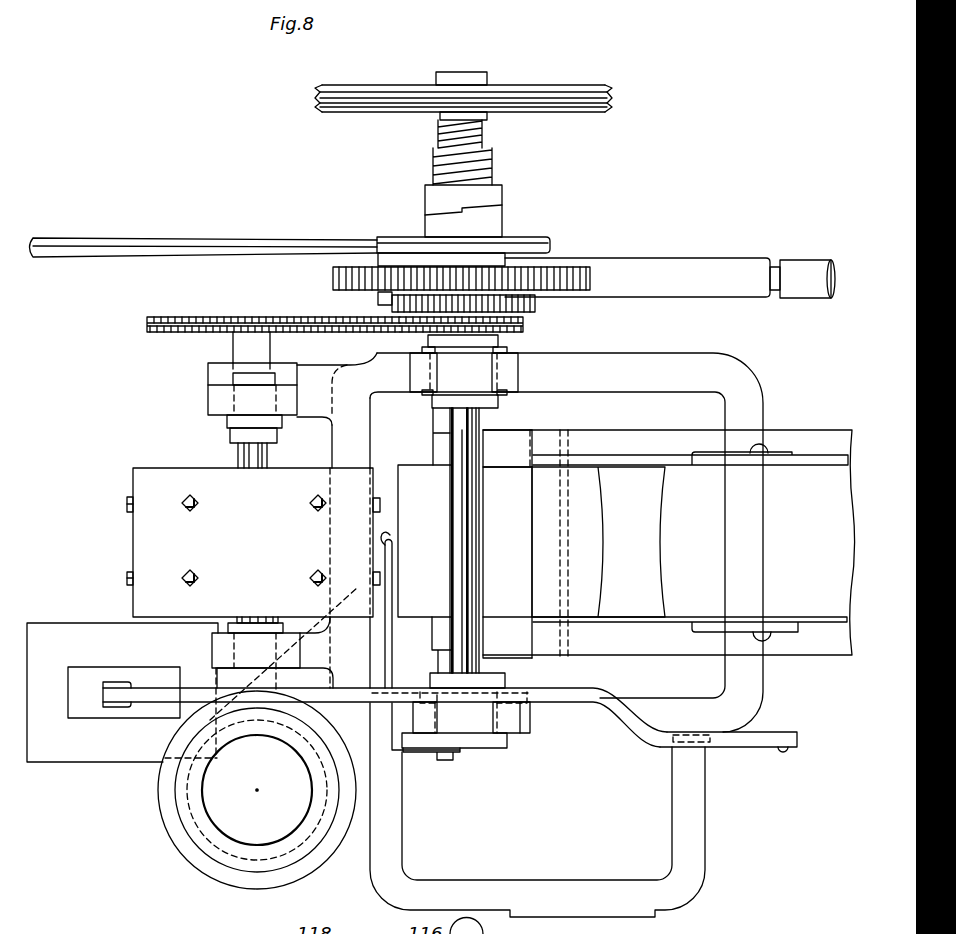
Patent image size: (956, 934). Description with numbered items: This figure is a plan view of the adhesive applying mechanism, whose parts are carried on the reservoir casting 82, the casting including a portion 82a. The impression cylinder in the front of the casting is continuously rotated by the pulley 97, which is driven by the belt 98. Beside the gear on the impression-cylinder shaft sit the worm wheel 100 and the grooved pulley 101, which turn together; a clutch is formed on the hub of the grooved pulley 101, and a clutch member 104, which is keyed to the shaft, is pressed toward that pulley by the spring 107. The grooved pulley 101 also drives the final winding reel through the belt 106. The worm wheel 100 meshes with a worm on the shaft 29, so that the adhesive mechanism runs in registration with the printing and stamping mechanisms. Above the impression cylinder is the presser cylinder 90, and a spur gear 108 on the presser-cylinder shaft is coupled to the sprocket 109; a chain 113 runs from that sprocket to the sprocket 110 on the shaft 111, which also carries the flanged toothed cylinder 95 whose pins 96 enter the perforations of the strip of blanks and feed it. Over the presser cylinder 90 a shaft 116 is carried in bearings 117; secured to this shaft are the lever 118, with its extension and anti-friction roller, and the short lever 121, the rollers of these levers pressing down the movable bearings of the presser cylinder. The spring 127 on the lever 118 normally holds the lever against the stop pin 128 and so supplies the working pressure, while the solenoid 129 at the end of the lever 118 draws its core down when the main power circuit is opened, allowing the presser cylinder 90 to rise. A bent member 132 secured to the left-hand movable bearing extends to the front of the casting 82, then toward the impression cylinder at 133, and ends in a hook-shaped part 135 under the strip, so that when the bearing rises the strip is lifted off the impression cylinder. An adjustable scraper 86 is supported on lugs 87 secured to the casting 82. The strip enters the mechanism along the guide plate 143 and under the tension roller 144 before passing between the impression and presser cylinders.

The pulley 97 is at (543, 85).
The belt 98 is at (605, 100).
The spring 107 is at (487, 134).
The clutch member 104 is at (492, 168).
The grooved pulley 101 is at (542, 232).
The belt 106 is at (153, 238).
The worm wheel 100 is at (583, 270).
The shaft 29 is at (790, 258).
The spur gear 108 is at (537, 304).
The sprocket 110 is at (170, 333).
The sprocket 109 is at (523, 326).
The chain 113 is at (200, 334).
The shaft 111 is at (238, 452).
The reservoir casting 82 is at (742, 374).
The bearings 117 is at (520, 378).
The short lever 121 is at (432, 400).
The shaft 116 is at (456, 497).
The presser cylinder 90 is at (425, 540).
The flanged toothed cylinder 95 is at (140, 548).
The pins 96 is at (127, 503).
The bent member 132 is at (424, 749).
The solenoid 129 is at (122, 692).
The boss 82a is at (173, 842).
The stop pin 128 is at (590, 702).
The lever 118 is at (633, 736).
The spring 127 is at (785, 733).
The extension of bent member toward impression cylinder 133 is at (394, 655).
The hook-shaped part 135 is at (390, 535).
The lugs 87 is at (527, 438).
The adjustable scraper 86 is at (566, 538).
The tension roller 144 is at (652, 545).
The guide plate 143 is at (830, 656).